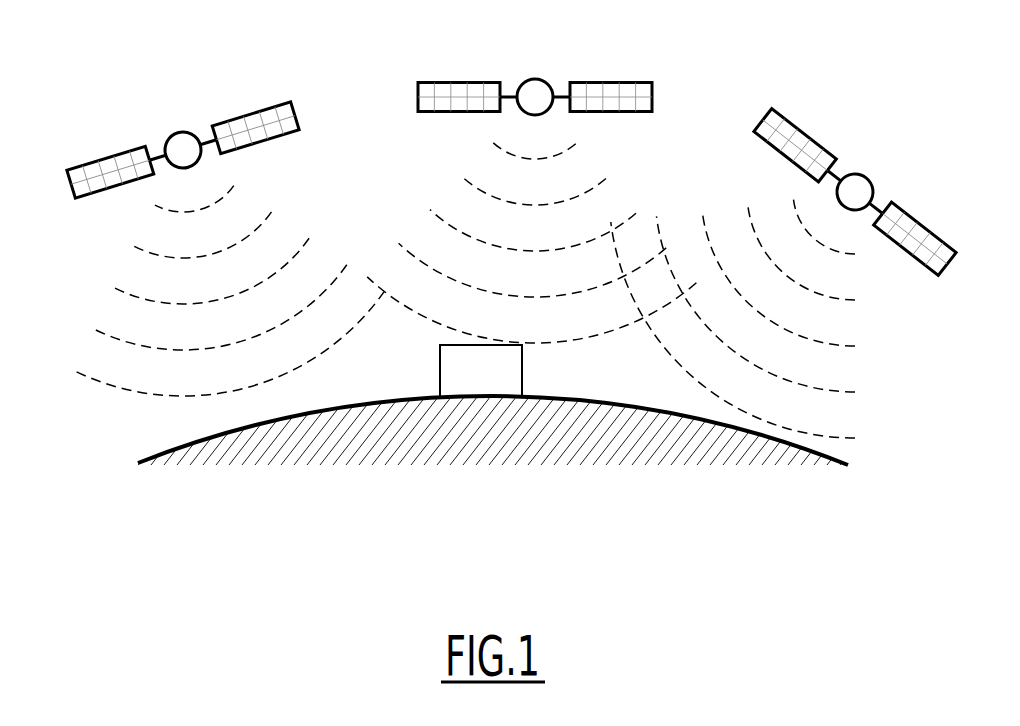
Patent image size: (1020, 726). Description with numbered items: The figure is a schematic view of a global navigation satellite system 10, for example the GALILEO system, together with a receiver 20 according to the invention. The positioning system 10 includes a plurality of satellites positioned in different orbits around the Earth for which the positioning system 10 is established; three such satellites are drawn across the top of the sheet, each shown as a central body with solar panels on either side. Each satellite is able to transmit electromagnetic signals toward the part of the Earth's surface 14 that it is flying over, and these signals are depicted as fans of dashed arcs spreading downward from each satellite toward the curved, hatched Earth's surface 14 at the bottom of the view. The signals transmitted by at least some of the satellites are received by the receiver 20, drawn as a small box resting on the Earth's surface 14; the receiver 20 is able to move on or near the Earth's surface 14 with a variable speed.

The global navigation satellite system 10 is at (110, 225).
The Earth's surface 14 is at (178, 447).
The receiver 20 is at (481, 371).